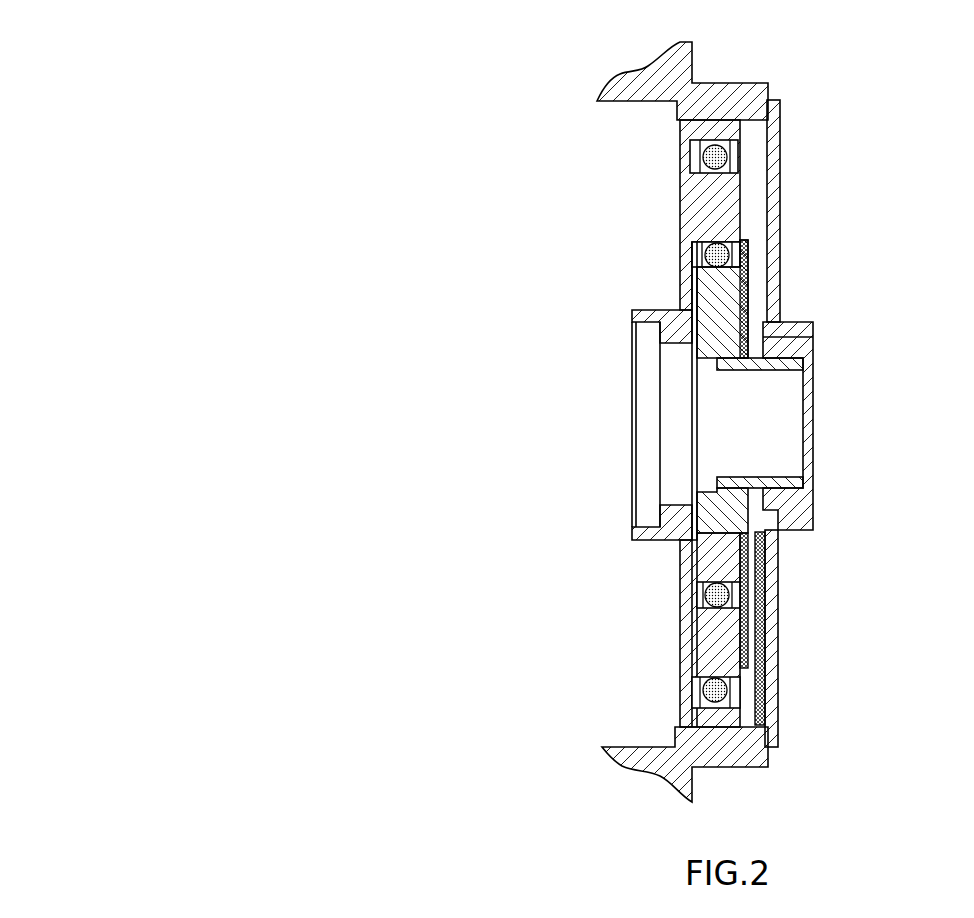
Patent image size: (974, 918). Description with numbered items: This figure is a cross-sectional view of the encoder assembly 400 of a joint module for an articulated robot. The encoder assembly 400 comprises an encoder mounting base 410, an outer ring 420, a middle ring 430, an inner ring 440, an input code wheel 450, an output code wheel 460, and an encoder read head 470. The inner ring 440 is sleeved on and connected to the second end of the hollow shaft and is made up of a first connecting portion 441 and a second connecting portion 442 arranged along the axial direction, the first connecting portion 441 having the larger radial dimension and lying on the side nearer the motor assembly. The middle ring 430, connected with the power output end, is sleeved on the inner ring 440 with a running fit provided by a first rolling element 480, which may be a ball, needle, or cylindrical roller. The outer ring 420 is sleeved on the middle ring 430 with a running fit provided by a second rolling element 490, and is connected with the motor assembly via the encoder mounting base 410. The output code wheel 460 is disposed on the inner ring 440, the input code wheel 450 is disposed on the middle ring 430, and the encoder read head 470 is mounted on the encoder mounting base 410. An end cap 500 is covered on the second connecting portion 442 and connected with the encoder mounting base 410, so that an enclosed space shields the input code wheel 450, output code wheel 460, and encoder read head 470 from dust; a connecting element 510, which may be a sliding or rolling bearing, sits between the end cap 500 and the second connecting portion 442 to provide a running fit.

The encoder assembly 400 is at (288, 136).
The encoder mounting base 410 is at (602, 96).
The outer ring 420 is at (680, 148).
The middle ring 430 is at (680, 228).
The inner ring 440 is at (467, 333).
The first connecting portion 441 is at (663, 348).
The second connecting portion 442 is at (770, 370).
The input code wheel 450 is at (770, 636).
The output code wheel 460 is at (752, 556).
The encoder read head 470 is at (766, 599).
The first rolling element 480 is at (682, 611).
The second rolling element 490 is at (682, 700).
The end cap 500 is at (779, 277).
The connecting element 510 is at (803, 342).